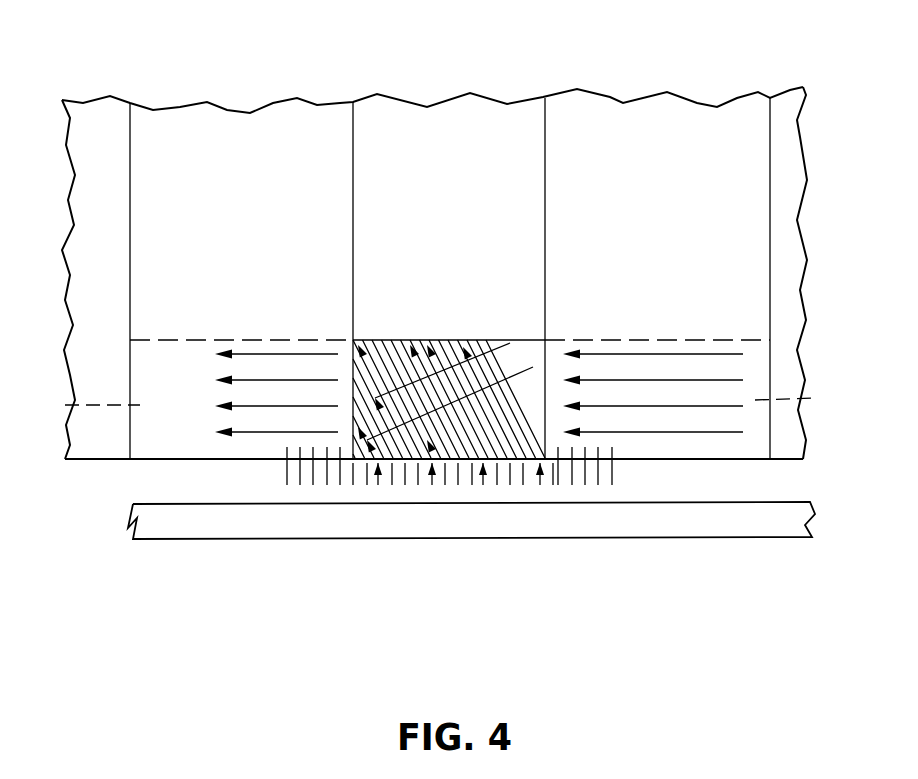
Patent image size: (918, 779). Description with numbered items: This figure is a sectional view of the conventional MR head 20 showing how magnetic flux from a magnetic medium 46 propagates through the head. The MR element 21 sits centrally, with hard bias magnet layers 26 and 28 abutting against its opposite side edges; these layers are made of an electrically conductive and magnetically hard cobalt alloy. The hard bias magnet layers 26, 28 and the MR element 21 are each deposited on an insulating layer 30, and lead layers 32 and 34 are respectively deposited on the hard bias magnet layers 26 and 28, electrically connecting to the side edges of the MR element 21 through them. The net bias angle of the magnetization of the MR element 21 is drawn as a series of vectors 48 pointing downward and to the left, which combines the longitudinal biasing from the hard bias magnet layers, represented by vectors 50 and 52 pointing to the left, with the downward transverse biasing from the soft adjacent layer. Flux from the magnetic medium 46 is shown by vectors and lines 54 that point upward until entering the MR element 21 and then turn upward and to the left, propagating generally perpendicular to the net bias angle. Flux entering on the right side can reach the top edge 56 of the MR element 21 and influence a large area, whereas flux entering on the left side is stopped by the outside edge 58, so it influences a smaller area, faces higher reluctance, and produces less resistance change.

The MR head 20 is at (700, 75).
The insulating layer 30 is at (787, 117).
The lead layer 32 is at (743, 242).
The lead layer 34 is at (150, 253).
The hard bias magnet layer 28 is at (86, 412).
The hard bias magnet layer 26 is at (802, 400).
The MR element 21 is at (374, 344).
The vectors and lines 54 is at (428, 342).
The top edge 56 is at (463, 343).
The vectors 48 is at (490, 356).
The outside edge 58 is at (352, 392).
The vectors 52 is at (242, 434).
The vectors 50 is at (683, 405).
The magnetic medium 46 is at (738, 522).